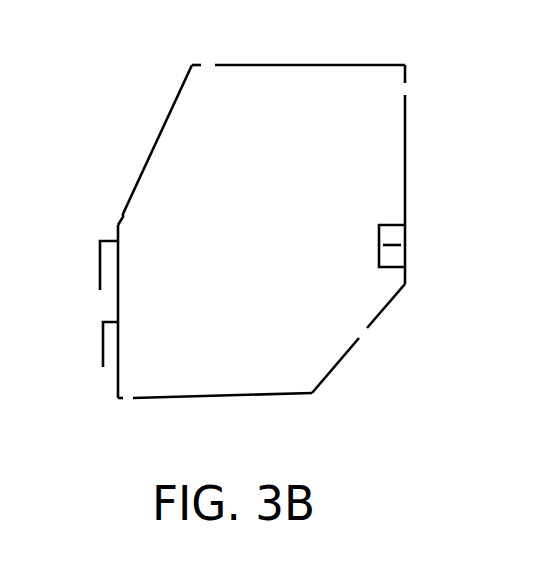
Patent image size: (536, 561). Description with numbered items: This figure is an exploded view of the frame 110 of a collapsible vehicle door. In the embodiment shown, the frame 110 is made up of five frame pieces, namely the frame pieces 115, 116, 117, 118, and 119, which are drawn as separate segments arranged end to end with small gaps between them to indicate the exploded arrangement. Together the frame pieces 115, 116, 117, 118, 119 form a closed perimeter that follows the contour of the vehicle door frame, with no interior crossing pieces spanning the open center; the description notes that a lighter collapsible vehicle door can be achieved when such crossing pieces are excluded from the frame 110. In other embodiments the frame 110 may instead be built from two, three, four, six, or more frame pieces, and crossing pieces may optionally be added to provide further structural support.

The frame 110 is at (253, 275).
The frame piece 115 is at (401, 309).
The frame piece 116 is at (329, 399).
The frame piece 117 is at (130, 272).
The frame piece 118 is at (173, 140).
The frame piece 119 is at (258, 76).